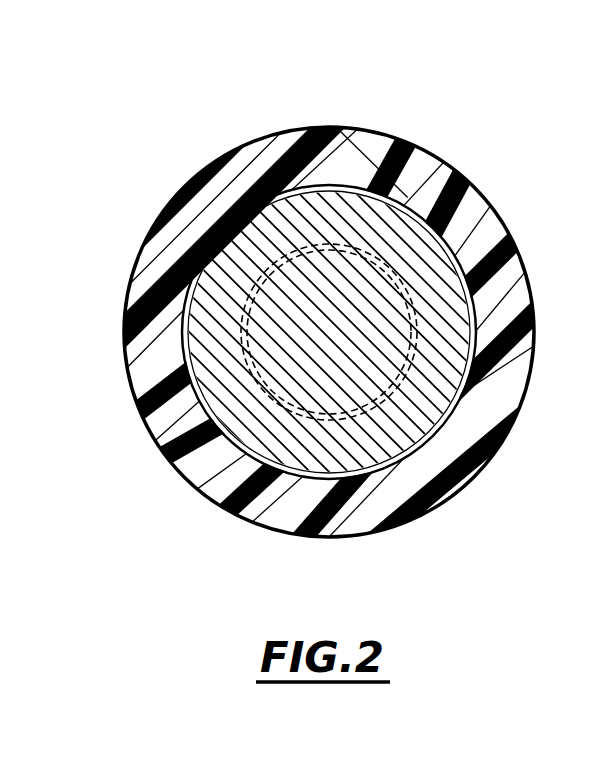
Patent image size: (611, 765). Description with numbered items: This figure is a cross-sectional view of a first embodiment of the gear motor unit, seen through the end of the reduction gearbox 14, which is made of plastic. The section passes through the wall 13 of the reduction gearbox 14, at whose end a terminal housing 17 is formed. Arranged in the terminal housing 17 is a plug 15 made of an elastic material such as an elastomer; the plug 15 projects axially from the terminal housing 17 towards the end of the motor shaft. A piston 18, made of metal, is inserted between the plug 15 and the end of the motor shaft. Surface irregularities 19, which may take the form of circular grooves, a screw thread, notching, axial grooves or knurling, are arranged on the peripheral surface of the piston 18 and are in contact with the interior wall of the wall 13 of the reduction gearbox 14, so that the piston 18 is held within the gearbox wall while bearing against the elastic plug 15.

The wall 13 is at (260, 518).
The reduction gearbox 14 is at (420, 523).
The plug 15 is at (317, 317).
The terminal housing 17 is at (252, 383).
The piston 18 is at (374, 228).
The surface irregularities 19 is at (458, 257).